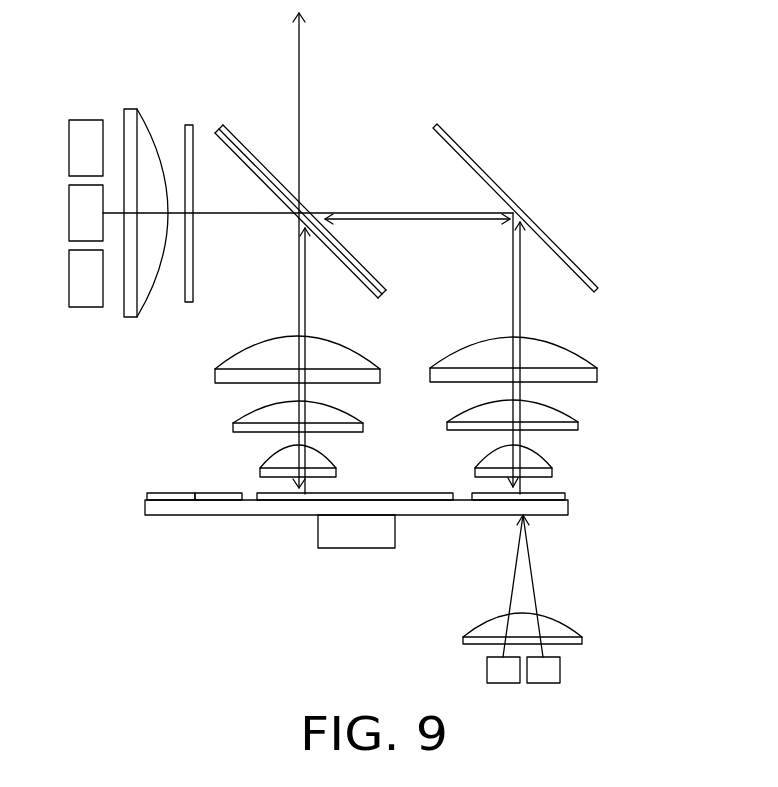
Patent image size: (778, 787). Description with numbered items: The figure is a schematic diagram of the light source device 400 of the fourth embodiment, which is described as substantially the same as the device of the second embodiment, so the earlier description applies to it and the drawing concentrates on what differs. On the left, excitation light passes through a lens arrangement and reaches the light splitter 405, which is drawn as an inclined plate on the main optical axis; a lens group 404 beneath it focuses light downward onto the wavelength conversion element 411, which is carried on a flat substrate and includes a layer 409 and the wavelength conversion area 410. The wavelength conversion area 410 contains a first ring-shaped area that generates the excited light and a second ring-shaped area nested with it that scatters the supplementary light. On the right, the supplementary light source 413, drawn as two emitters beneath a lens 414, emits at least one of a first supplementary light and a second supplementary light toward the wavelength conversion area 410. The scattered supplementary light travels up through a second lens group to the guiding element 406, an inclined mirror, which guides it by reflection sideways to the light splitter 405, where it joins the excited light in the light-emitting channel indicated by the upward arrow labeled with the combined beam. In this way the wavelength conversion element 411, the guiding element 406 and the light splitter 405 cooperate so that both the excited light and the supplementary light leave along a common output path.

The light source device 400 is at (197, 58).
The lens 404 is at (353, 345).
The light splitter 405 is at (310, 200).
The guiding element 406 is at (563, 250).
The wavelength conversion layer 409 is at (347, 493).
The wavelength conversion area 410 is at (480, 493).
The wavelength conversion element 411 is at (312, 523).
The supplementary light source 413 is at (563, 667).
The lens 414 is at (563, 607).